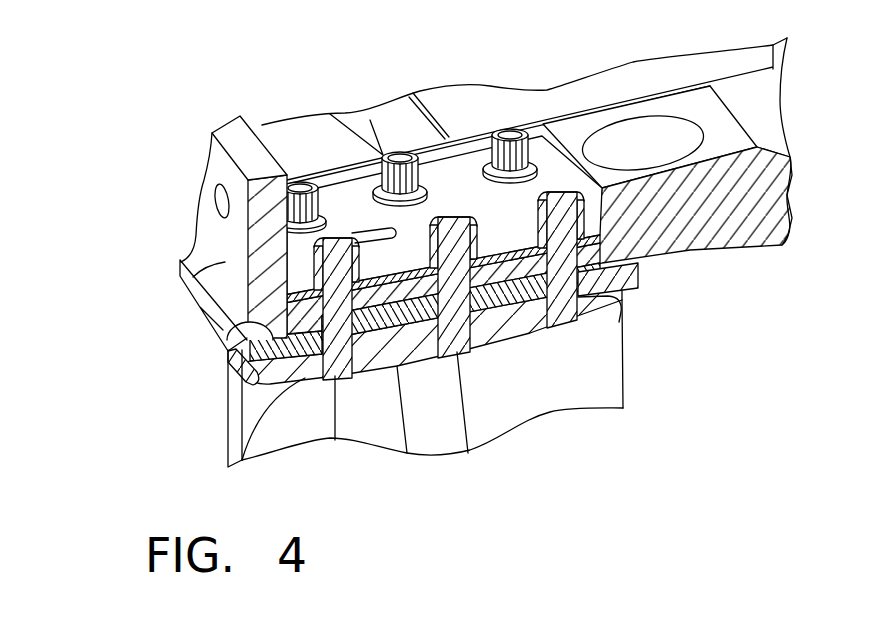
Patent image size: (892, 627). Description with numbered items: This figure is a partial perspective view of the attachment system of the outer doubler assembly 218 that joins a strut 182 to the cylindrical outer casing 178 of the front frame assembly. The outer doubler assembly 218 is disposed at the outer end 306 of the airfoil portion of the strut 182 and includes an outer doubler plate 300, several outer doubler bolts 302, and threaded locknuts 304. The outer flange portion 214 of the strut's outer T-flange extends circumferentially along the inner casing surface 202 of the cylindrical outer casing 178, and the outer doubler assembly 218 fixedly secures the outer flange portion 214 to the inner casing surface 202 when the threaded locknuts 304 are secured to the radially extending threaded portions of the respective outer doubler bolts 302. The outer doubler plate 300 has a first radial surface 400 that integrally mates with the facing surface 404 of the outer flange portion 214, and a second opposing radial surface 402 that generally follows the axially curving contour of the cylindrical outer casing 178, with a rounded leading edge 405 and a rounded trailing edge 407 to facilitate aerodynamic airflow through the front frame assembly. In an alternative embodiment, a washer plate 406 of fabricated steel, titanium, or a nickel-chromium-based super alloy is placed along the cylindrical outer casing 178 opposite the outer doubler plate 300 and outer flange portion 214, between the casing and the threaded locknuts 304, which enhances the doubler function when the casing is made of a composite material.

The cylindrical outer casing 178 is at (255, 296).
The strut 182 is at (620, 353).
The inner casing surface 202 is at (227, 338).
The outer flange portion 214 is at (640, 283).
The outer doubler assembly 218 is at (516, 92).
The outer doubler plate 300 is at (242, 432).
The outer doubler bolt 302 is at (561, 195).
The threaded locknut 304 is at (447, 135).
The outer end 306 is at (577, 385).
The first radial surface 400 is at (527, 313).
The second opposing radial surface 402 is at (347, 377).
The facing surface 404 is at (498, 306).
The rounded leading edge 405 is at (230, 378).
The washer plate 406 is at (330, 200).
The rounded trailing edge 407 is at (620, 303).